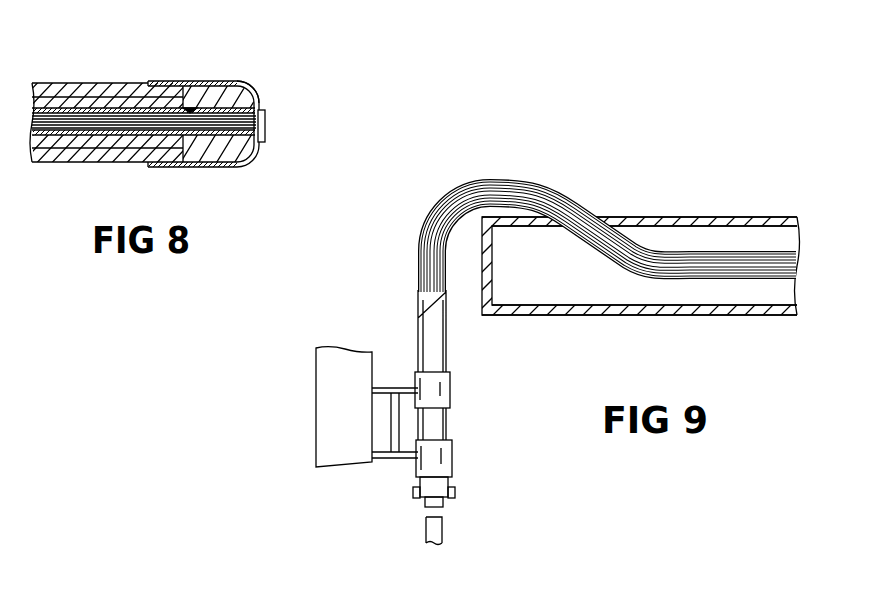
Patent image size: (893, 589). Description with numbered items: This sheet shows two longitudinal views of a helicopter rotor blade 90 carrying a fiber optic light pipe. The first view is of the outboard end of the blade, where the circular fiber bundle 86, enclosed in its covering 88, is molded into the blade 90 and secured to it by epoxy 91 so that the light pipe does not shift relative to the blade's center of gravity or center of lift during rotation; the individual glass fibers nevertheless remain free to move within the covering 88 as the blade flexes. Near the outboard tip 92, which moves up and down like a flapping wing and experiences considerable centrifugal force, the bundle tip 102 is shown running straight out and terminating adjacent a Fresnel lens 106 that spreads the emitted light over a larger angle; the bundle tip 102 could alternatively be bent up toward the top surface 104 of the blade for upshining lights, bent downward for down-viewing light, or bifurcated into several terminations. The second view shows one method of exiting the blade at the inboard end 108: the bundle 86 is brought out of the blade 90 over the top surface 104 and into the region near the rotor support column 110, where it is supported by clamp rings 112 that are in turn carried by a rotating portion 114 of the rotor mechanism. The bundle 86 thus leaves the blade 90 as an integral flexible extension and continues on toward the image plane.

In FIG. 8, the fiber bundle 86 is at (91, 125).
In FIG. 9, the fiber bundle 86 is at (504, 194).
In FIG. 8, the covering 88 is at (93, 107).
In FIG. 9, the covering 88 is at (607, 259).
In FIG. 8, the helicopter rotor blade 90 is at (119, 165).
In FIG. 9, the helicopter rotor blade 90 is at (695, 316).
In FIG. 8, the epoxy 91 is at (66, 97).
In FIG. 8, the outboard tip 92 is at (242, 93).
In FIG. 8, the bundle tip 102 is at (221, 135).
In FIG. 8, the top surface 104 is at (140, 84).
In FIG. 9, the top surface 104 is at (672, 216).
In FIG. 8, the Fresnel lens 106 is at (266, 127).
In FIG. 9, the inboard end 108 is at (489, 318).
In FIG. 9, the rotor support column 110 is at (316, 382).
In FIG. 9, the clamp rings 112 is at (441, 398).
In FIG. 9, the rotating portion 114 is at (373, 378).